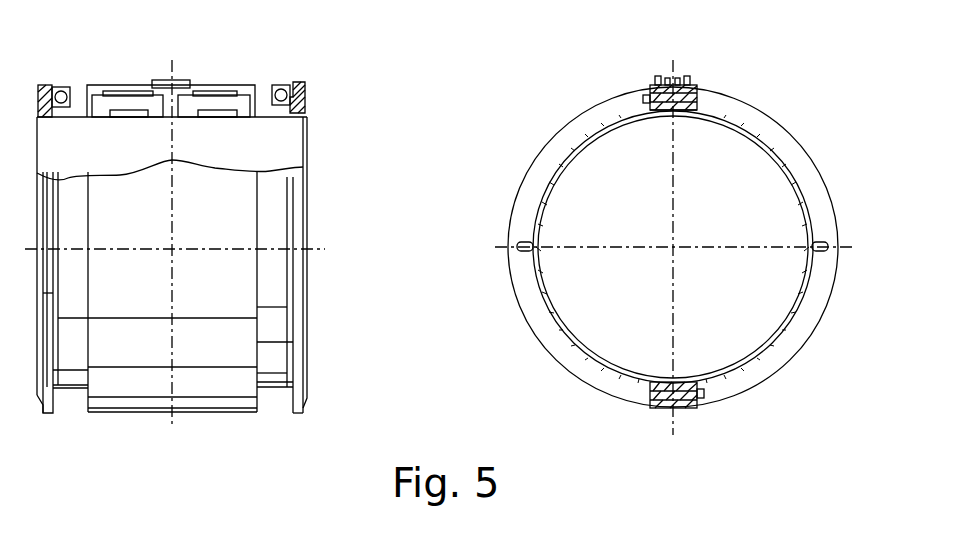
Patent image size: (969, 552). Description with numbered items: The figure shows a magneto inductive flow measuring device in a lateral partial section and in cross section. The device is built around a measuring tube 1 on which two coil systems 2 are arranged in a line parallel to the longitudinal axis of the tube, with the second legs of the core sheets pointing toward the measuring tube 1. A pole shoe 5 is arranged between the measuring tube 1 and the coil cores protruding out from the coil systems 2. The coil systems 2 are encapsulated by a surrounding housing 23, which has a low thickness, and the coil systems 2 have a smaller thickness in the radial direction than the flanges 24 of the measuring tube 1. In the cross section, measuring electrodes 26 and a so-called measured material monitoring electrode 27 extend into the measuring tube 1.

The measuring tube 1 is at (568, 338).
The coil system 2 is at (116, 100).
The pole shoe 5 is at (742, 124).
The housing 23 is at (210, 412).
The flange 24 is at (305, 96).
The measuring electrode 26 is at (660, 78).
The measured material monitoring electrode 27 is at (674, 112).